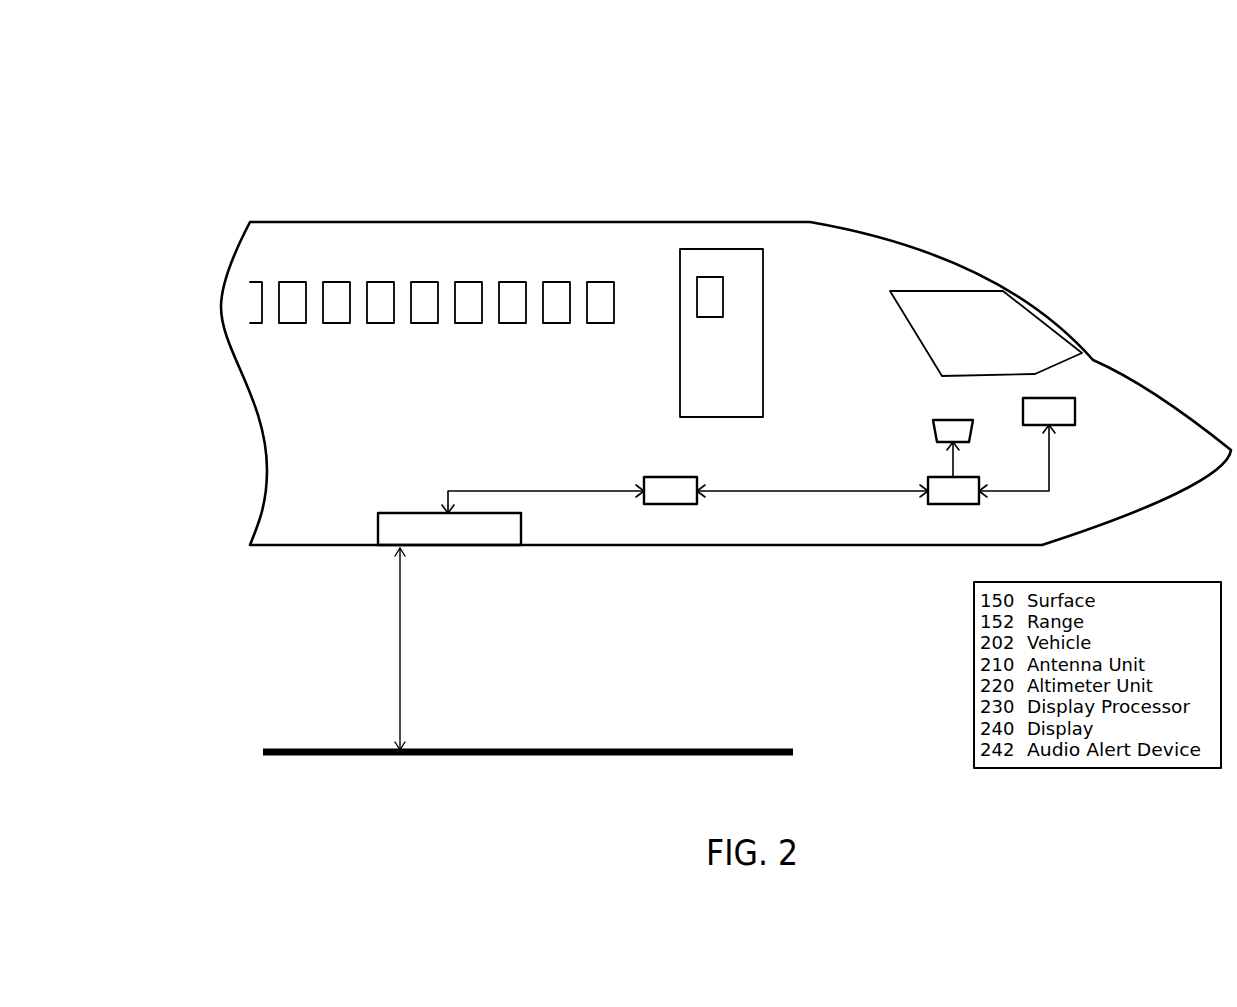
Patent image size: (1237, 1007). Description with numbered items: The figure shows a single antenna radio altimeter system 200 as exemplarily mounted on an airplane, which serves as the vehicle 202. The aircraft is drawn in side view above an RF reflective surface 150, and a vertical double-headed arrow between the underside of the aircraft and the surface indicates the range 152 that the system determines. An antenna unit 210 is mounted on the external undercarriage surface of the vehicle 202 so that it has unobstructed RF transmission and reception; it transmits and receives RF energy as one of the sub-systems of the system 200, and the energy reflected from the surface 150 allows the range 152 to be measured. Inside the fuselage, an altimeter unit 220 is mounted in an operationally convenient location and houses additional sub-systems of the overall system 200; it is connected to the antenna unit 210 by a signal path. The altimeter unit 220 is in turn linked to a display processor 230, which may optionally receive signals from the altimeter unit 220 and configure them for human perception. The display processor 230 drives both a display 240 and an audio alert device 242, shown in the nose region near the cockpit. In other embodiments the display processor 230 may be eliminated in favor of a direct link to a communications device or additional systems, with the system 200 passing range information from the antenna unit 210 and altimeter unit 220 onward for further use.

The single antenna radio altimeter system 200 is at (193, 130).
The RF reflective surface 150 is at (295, 749).
The range 152 is at (400, 655).
The vehicle 202 is at (565, 222).
The antenna unit 210 is at (450, 545).
The altimeter unit 220 is at (668, 504).
The display processor 230 is at (953, 504).
The display 240 is at (1075, 408).
The audio alert device 242 is at (933, 430).